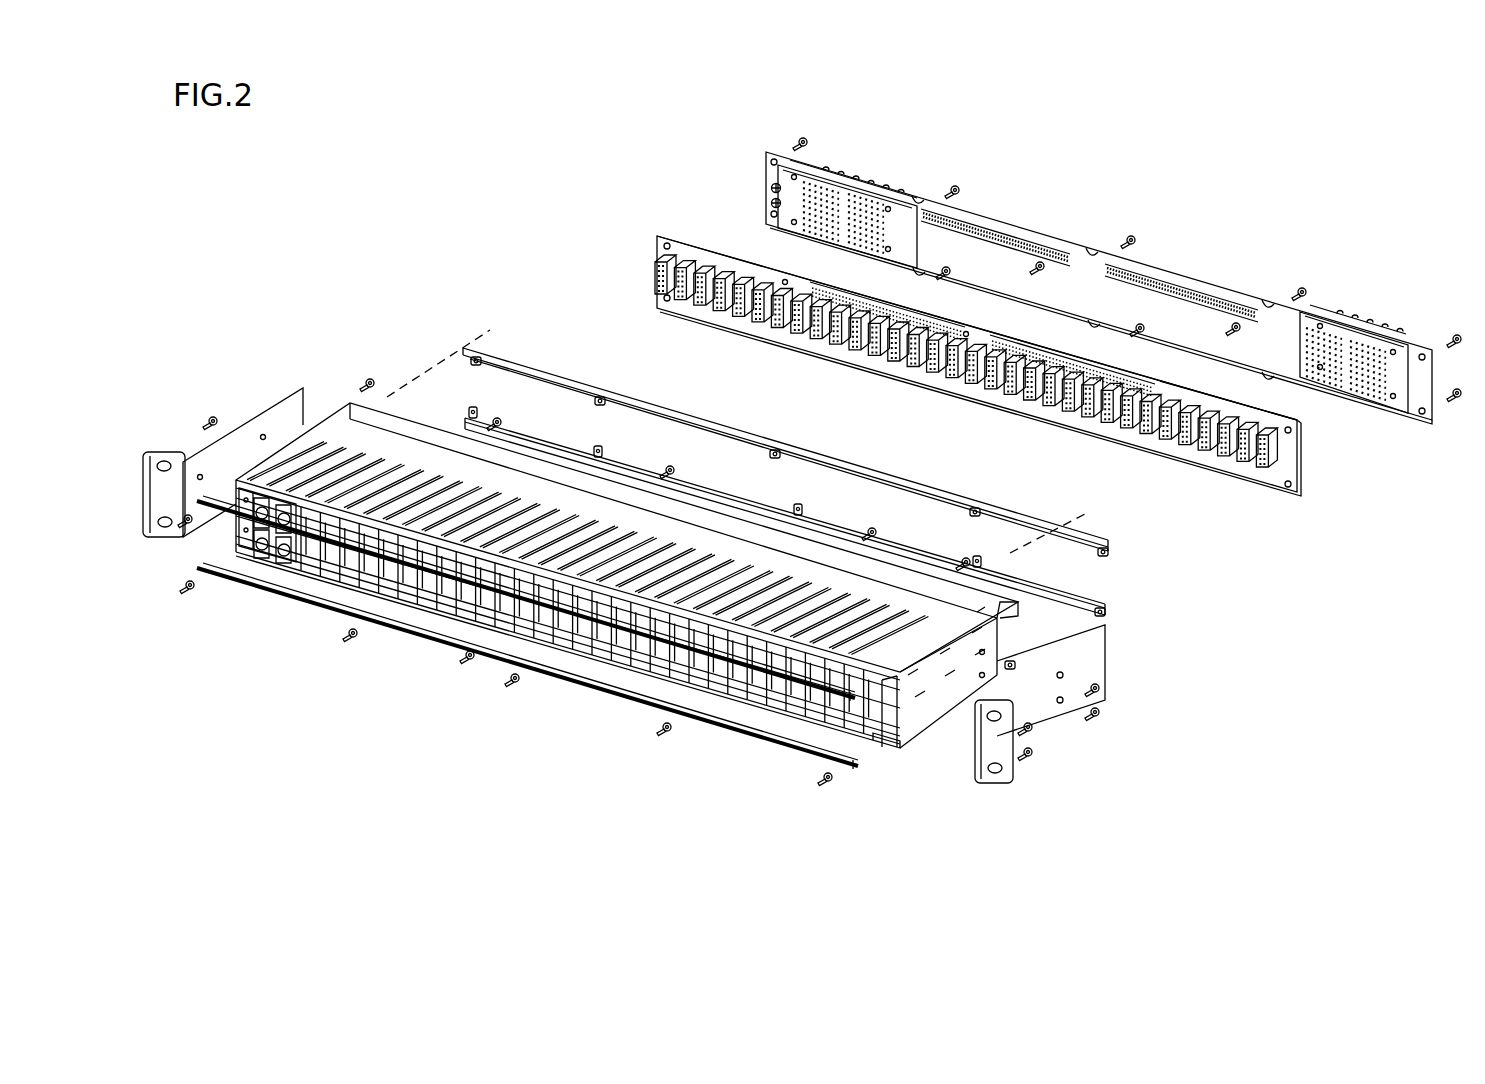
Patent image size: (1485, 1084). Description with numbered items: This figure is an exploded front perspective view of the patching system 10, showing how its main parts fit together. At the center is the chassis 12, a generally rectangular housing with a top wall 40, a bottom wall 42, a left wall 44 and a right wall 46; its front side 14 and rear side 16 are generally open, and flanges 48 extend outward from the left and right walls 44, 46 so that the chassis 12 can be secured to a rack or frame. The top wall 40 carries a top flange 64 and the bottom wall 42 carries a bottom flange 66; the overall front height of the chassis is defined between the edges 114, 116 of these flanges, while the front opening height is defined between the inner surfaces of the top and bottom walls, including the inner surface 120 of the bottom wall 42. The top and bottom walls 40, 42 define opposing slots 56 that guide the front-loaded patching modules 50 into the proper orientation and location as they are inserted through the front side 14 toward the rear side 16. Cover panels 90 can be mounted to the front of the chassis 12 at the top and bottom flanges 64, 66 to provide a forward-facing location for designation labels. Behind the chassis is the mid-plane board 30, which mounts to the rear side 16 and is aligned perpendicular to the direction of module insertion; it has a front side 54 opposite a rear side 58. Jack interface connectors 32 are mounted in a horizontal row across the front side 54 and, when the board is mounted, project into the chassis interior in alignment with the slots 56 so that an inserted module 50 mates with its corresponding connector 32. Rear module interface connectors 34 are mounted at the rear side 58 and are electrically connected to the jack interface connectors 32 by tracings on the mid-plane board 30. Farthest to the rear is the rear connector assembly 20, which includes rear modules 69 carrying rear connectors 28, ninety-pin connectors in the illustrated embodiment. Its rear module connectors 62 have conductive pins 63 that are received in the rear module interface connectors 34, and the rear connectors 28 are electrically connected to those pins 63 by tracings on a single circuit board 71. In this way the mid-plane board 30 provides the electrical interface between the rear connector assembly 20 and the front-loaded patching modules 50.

The patching system 10 is at (468, 225).
The chassis 12 is at (1160, 642).
The front side 14 is at (430, 688).
The rear side 16 is at (1160, 578).
The rear connector assembly 20 is at (740, 161).
The rear connectors 28 is at (890, 182).
The mid-plane board 30 is at (605, 222).
The jack interface connectors 32 is at (820, 342).
The rear module interface connectors 34 is at (925, 316).
The top wall 40 is at (345, 443).
The bottom wall 42 is at (625, 670).
The left wall 44 is at (275, 405).
The right wall 46 is at (1087, 663).
The flanges 48 is at (163, 503).
The front-loaded patching modules 50 is at (288, 555).
The front side 54 is at (690, 253).
The slots 56 is at (730, 617).
The rear side 58 is at (672, 242).
The rear module connectors 62 is at (1063, 256).
The conductive pins 63 is at (1035, 245).
The top flange 64 is at (897, 683).
The bottom flange 66 is at (877, 743).
The rear modules 69 is at (880, 140).
The circuit board 71 is at (1213, 330).
The cover panels 90 is at (588, 688).
The edge 114 is at (378, 510).
The edge 116 is at (347, 590).
The inner surface 120 is at (495, 650).